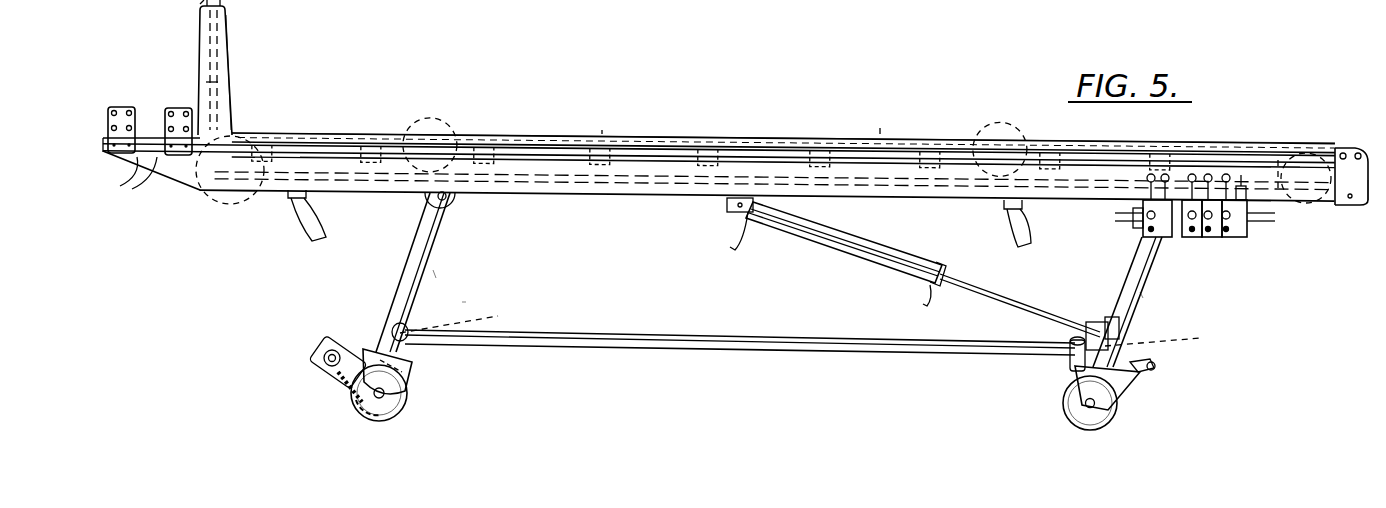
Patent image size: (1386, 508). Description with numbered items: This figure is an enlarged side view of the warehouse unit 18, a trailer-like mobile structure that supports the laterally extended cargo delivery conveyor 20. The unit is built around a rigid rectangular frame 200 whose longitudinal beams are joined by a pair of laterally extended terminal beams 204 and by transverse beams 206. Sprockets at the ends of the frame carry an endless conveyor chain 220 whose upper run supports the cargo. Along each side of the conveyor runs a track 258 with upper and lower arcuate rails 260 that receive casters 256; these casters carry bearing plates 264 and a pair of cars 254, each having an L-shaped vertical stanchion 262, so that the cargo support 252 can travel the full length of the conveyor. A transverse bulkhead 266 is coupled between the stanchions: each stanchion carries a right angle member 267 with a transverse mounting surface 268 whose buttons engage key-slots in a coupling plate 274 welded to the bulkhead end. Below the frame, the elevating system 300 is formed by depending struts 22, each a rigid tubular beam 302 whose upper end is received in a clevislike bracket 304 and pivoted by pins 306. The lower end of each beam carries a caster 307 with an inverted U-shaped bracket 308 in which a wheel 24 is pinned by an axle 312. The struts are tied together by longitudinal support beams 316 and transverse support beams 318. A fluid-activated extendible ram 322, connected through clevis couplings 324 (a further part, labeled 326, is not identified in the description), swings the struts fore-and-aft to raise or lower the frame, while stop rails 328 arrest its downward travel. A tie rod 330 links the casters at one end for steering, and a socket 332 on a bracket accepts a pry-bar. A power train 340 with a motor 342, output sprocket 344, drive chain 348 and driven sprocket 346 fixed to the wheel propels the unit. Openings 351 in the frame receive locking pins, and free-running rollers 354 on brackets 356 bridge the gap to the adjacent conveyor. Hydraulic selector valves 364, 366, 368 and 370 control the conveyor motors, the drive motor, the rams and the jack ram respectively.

The warehouse unit 18 is at (881, 130).
The cargo delivery conveyor 20 is at (602, 134).
The struts 22 is at (433, 272).
The wheel 24 is at (399, 414).
The frame 200 is at (606, 196).
The terminal beams 204 is at (220, 192).
The transverse beams 206 is at (715, 137).
The conveyor chain 220 is at (736, 134).
The cargo support 252 is at (234, 0).
The cars 254 is at (198, 100).
The casters 256 is at (132, 178).
The tracks 258 is at (531, 133).
The arcuate rails 260 is at (667, 162).
The stanchion 262 is at (226, 76).
The bearing plates 264 is at (164, 118).
The bulkhead 266 is at (200, 2).
The right angle member 267 is at (230, 53).
The transverse mounting surface 268 is at (213, 42).
The coupling plate 274 is at (206, 82).
The elevating system 300 is at (462, 303).
The tubular beam 302 is at (418, 278).
The clevislike bracket 304 is at (428, 197).
The pins 306 is at (448, 197).
The caster 307 is at (408, 402).
The inverted U-shaped bracket 308 is at (411, 374).
The axle or bearing pin 312 is at (380, 400).
The longitudinal support beams 316 is at (725, 344).
The transverse support beams 318 is at (822, 327).
The extendible rams 322 is at (859, 243).
The clevis couplings 324 is at (1120, 320).
The cylinder mount 326 is at (726, 213).
The stop rails 328 is at (300, 236).
The tie rod 330 is at (1157, 364).
The socket 332 is at (1071, 341).
The power train 340 is at (347, 346).
The motor 342 is at (314, 349).
The output sprocket 344 is at (312, 362).
The driven sprocket 346 is at (366, 408).
The drive chain 348 is at (345, 385).
The openings 351 is at (1345, 200).
The free-running rollers 354 is at (1345, 148).
The brackets 356 is at (1362, 202).
The two-way selector valve 364 is at (1206, 237).
The two-way selector valve 366 is at (1188, 237).
The ram selector valve 368 is at (1224, 237).
The ram selector valve 370 is at (1144, 222).